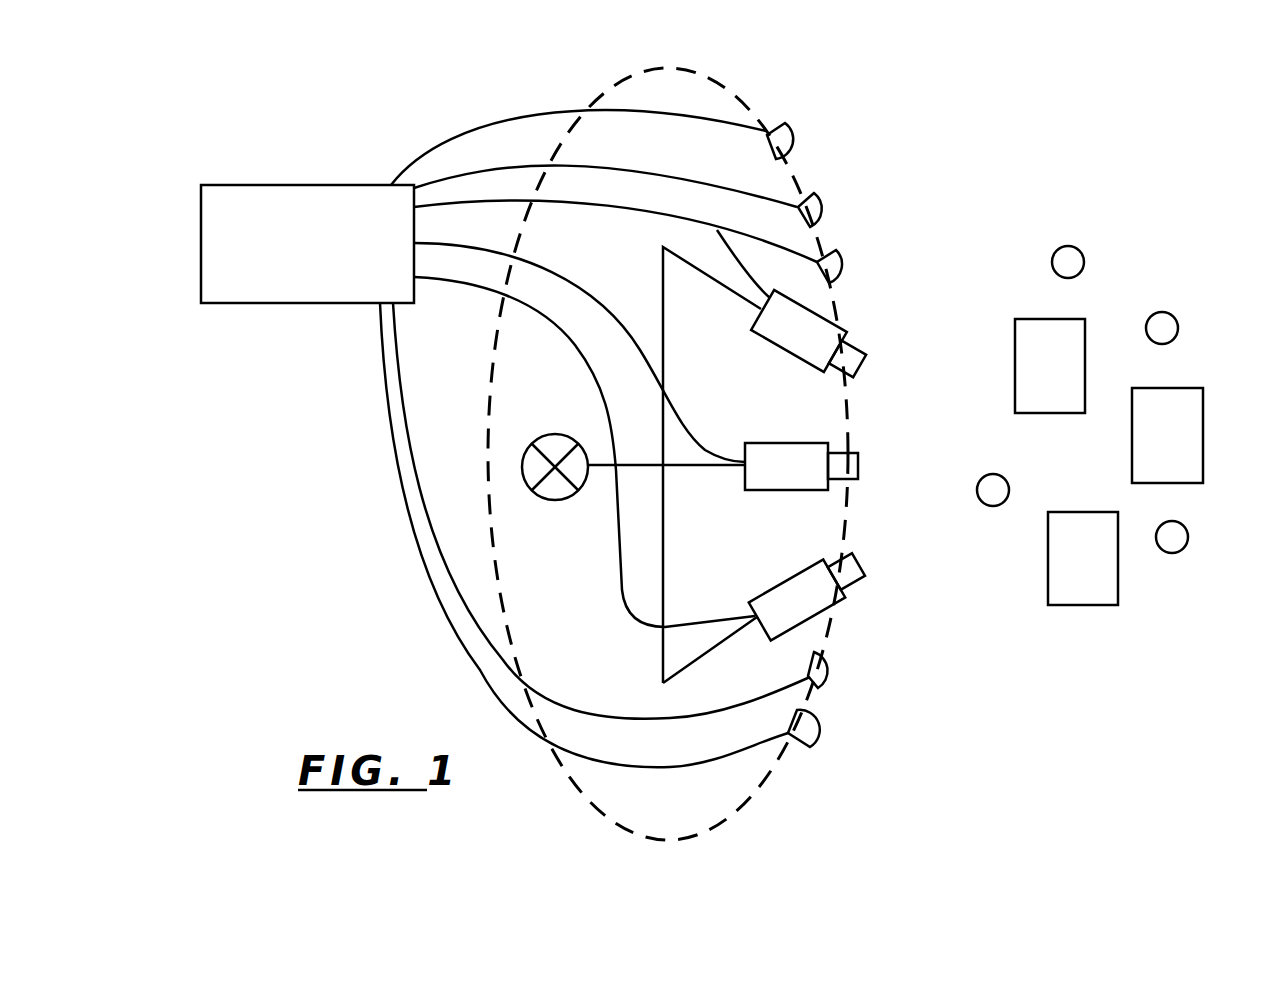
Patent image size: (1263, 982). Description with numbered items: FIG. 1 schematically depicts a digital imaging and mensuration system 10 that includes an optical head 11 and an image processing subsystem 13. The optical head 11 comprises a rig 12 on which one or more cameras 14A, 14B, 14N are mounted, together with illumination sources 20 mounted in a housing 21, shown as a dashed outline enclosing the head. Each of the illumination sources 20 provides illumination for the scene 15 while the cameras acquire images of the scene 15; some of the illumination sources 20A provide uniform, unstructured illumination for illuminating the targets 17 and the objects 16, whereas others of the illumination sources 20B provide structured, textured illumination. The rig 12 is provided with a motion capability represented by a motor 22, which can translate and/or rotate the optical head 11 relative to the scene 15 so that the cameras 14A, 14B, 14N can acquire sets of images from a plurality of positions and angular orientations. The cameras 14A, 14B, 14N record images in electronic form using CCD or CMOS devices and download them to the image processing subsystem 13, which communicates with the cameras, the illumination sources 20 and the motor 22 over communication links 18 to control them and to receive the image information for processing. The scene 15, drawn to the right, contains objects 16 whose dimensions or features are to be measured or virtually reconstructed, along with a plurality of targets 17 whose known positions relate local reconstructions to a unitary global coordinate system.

The digital imaging and mensuration system 10 is at (428, 118).
The optical head 11 is at (885, 283).
The rig 12 is at (665, 312).
The image processing subsystem 13 is at (307, 244).
The camera 14A is at (837, 326).
The camera 14B is at (777, 443).
The camera 14N is at (827, 616).
The scene 15 is at (995, 238).
The objects 16 is at (1073, 512).
The targets 17 is at (1150, 315).
The communication links 18 is at (490, 306).
The illumination sources 20 is at (765, 177).
The unstructured illumination source 20A is at (793, 140).
The structured illumination source 20B is at (822, 208).
The housing 21 is at (758, 783).
The motor 22 is at (552, 502).